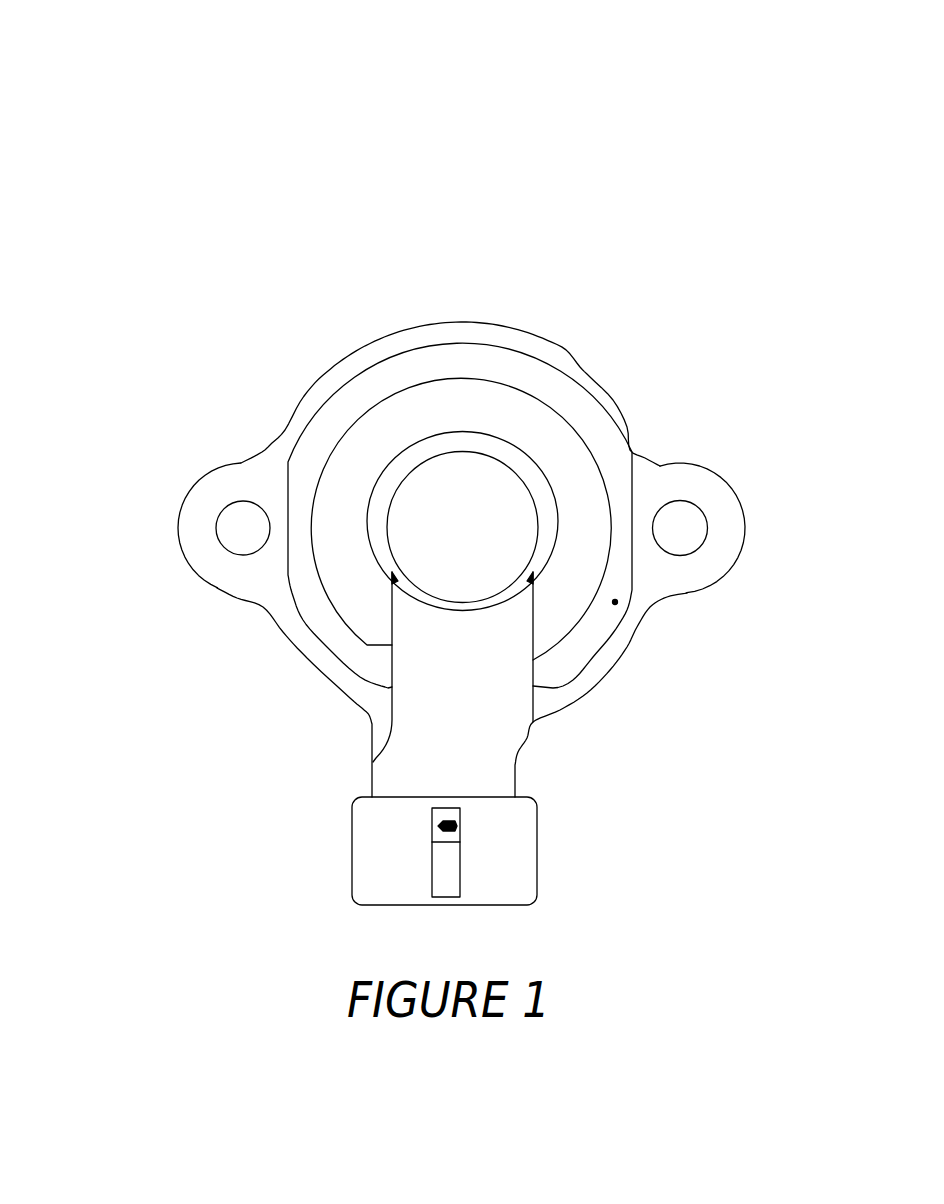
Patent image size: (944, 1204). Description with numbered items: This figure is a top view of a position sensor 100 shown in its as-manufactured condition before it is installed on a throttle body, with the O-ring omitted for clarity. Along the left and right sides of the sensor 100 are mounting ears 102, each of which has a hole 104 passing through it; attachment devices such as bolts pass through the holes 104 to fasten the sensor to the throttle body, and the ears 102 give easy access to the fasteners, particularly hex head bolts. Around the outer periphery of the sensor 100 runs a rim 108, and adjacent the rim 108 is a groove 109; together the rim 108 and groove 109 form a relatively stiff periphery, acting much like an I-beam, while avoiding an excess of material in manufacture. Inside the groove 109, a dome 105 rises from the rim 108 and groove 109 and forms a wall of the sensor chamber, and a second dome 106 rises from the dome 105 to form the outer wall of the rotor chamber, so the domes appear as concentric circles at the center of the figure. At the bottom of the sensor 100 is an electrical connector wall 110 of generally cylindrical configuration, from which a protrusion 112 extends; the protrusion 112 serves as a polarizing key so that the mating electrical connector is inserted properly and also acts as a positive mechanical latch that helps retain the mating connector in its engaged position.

The position sensor 100 is at (625, 138).
The mounting ears 102 is at (208, 558).
The holes 104 is at (230, 517).
The dome 105 is at (507, 413).
The second dome 106 is at (483, 515).
The rim 108 is at (327, 387).
The groove 109 is at (405, 377).
The electrical connector wall 110 is at (400, 840).
The protrusion 112 is at (458, 830).